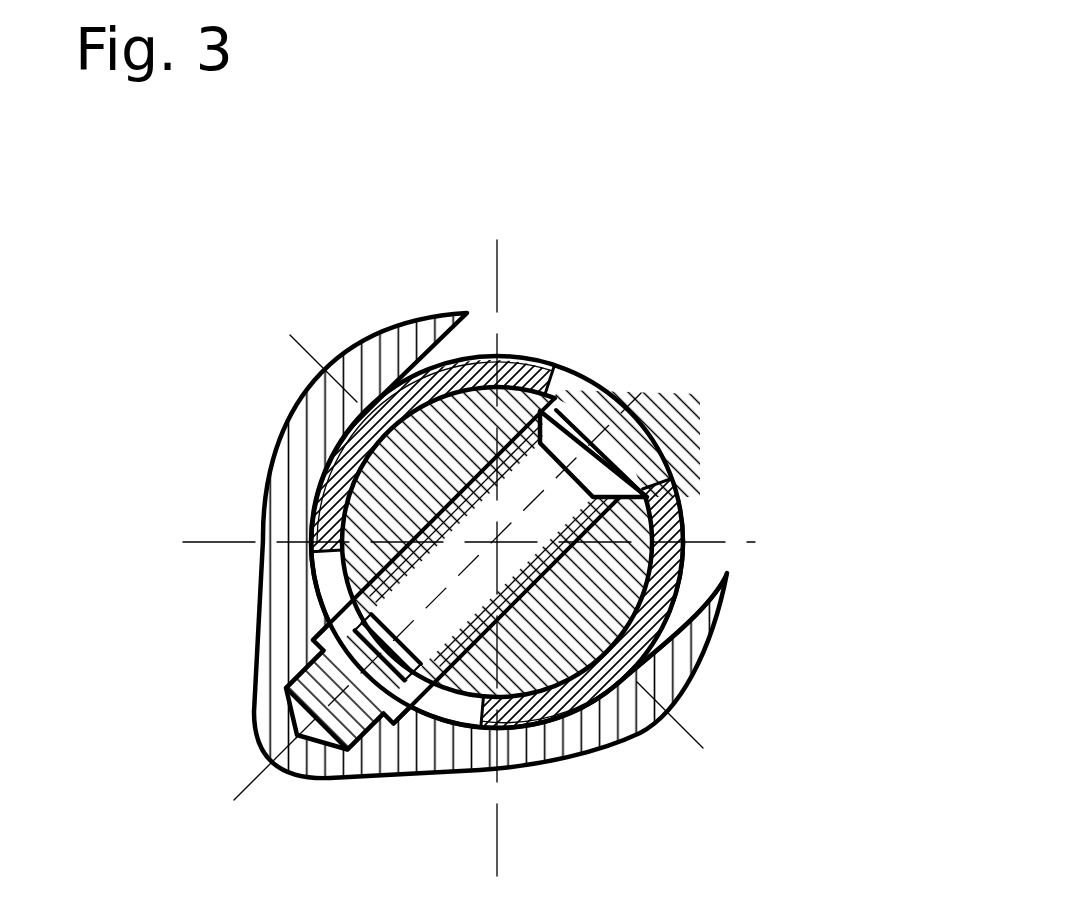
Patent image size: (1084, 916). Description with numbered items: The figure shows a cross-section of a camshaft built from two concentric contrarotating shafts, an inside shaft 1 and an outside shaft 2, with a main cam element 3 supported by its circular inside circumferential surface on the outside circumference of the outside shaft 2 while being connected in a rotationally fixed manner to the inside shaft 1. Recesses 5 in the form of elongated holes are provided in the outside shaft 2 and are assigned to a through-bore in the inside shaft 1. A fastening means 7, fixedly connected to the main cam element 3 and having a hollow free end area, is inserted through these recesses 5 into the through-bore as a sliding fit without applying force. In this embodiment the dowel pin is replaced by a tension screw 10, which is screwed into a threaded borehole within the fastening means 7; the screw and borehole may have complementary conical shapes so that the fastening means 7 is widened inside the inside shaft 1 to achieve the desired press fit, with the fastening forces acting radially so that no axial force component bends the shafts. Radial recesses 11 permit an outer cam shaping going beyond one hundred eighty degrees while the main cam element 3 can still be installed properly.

The inside shaft 1 is at (675, 475).
The outside shaft 2 is at (683, 523).
The main cam element 3 is at (565, 747).
The recesses 5 is at (645, 455).
The fastening means 7 is at (320, 633).
The tension screw 10 is at (567, 400).
The radial recesses 11 is at (690, 597).